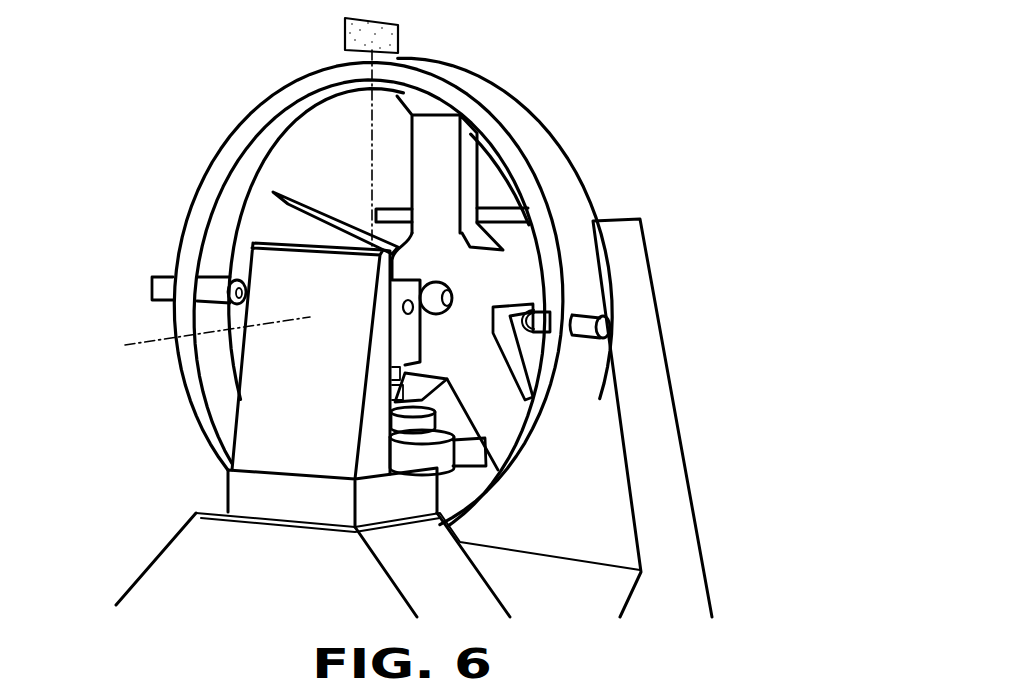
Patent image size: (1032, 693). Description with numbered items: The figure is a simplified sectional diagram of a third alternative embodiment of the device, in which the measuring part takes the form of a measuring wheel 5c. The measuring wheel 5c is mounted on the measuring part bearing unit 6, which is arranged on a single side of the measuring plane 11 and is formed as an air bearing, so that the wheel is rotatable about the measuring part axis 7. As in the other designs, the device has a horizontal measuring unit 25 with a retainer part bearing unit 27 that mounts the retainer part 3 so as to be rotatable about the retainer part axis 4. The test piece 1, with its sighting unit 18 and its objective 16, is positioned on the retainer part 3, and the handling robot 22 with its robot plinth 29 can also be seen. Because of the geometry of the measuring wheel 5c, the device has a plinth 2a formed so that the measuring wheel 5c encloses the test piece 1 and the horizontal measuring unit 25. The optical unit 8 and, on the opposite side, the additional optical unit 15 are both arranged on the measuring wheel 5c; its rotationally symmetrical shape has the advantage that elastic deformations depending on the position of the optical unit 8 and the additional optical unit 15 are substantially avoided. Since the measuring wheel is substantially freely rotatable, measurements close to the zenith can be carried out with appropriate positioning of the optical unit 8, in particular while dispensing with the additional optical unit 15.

The test piece 1 is at (431, 262).
The plinth 2a is at (460, 597).
The retainer part 3 is at (448, 379).
The retainer part axis 4 is at (372, 186).
The measuring wheel 5c is at (547, 170).
The measuring part bearing unit 6 is at (447, 292).
The measuring part axis 7 is at (155, 341).
The optical unit 8 is at (605, 327).
The measuring plane 11 is at (387, 38).
The additional optical unit 15 is at (208, 288).
The objective 16 is at (412, 309).
The sighting unit 18 is at (442, 281).
The handling robot 22 is at (214, 378).
The horizontal measuring unit 25 is at (476, 454).
The retainer part bearing unit 27 is at (417, 415).
The robot plinth 29 is at (297, 428).